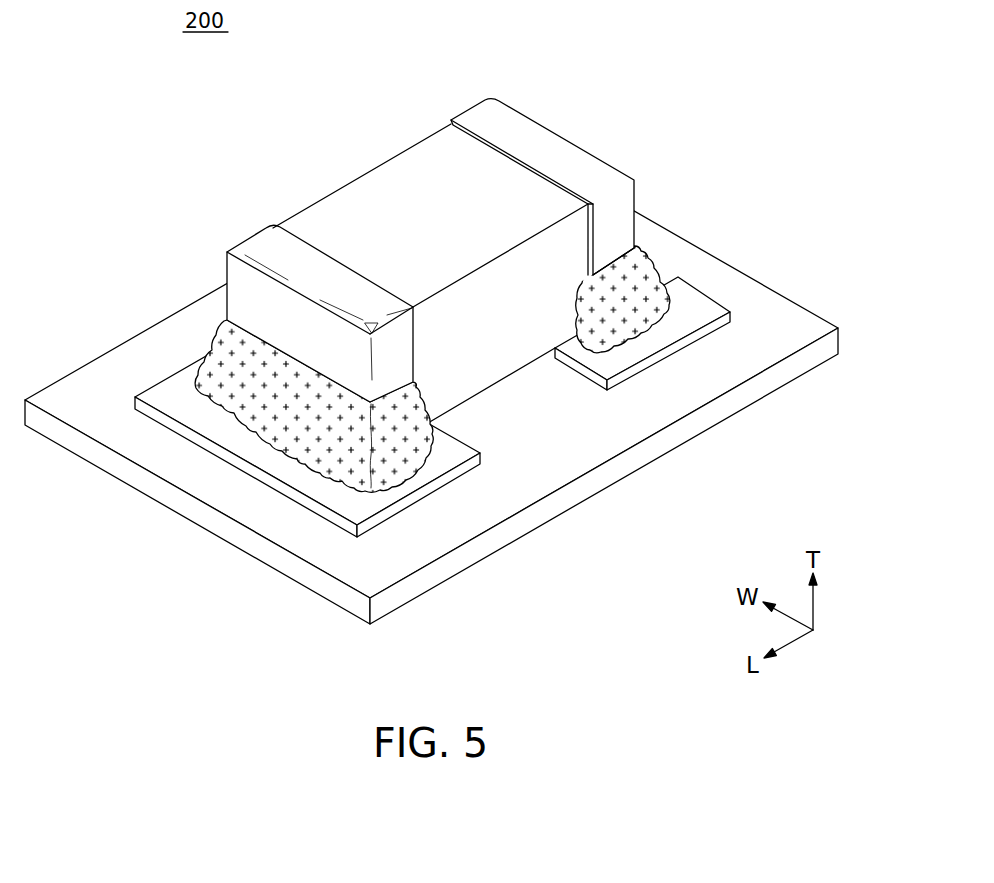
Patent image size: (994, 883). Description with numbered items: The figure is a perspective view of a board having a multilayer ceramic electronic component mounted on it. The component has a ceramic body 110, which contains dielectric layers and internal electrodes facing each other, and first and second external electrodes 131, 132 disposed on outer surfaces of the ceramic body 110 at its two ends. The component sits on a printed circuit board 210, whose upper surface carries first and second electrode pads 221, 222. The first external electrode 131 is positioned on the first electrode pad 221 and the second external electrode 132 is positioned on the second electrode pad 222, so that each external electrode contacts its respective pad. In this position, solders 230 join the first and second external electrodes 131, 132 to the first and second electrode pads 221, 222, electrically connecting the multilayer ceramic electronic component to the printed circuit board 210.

The ceramic body 110 is at (371, 175).
The first external electrode 131 is at (265, 243).
The second external electrode 132 is at (480, 118).
The printed circuit board 210 is at (553, 468).
The first electrode pad 221 is at (360, 505).
The second electrode pad 222 is at (688, 318).
The solder 230 is at (402, 448).